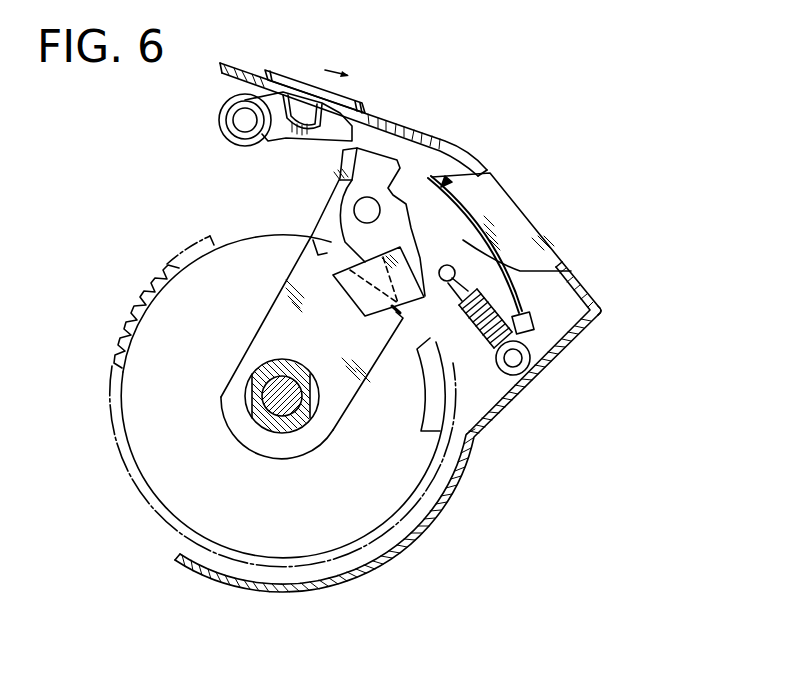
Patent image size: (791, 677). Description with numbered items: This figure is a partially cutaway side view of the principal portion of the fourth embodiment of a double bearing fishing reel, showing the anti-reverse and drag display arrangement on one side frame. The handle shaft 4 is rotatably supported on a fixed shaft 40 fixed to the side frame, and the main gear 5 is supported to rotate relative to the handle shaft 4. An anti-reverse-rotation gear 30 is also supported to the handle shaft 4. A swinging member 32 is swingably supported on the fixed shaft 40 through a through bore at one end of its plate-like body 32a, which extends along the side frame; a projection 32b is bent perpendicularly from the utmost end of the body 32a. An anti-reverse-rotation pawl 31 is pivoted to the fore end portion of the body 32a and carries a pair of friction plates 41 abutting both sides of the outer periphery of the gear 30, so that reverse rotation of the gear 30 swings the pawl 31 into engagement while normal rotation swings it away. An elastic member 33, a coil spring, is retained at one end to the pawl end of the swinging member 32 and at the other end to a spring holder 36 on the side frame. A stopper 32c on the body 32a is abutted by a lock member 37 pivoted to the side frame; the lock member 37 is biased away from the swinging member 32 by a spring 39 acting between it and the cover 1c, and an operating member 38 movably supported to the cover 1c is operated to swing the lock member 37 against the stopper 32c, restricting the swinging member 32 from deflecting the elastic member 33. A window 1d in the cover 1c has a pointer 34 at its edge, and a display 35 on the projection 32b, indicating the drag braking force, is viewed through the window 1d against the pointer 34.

The cover 1c is at (596, 321).
The window 1d is at (517, 207).
The handle shaft 4 is at (289, 405).
The main gear 5 is at (118, 310).
The anti-reverse-rotation gear 30 is at (428, 338).
The anti-reverse-rotation pawl 31 is at (397, 228).
The swinging member 32 is at (280, 276).
The plate-like body 32a is at (267, 325).
The projection 32b is at (533, 232).
The stopper 32c is at (348, 150).
The elastic member 33 is at (527, 302).
The pointer 34 is at (446, 182).
The display 35 is at (466, 208).
The spring holder 36 is at (520, 363).
The lock member 37 is at (337, 120).
The operating member 38 is at (302, 78).
The spring 39 is at (257, 93).
The fixed shaft 40 is at (277, 410).
The friction plates 41 is at (353, 293).